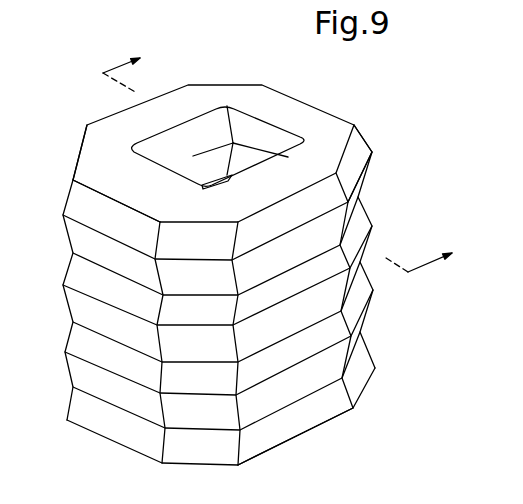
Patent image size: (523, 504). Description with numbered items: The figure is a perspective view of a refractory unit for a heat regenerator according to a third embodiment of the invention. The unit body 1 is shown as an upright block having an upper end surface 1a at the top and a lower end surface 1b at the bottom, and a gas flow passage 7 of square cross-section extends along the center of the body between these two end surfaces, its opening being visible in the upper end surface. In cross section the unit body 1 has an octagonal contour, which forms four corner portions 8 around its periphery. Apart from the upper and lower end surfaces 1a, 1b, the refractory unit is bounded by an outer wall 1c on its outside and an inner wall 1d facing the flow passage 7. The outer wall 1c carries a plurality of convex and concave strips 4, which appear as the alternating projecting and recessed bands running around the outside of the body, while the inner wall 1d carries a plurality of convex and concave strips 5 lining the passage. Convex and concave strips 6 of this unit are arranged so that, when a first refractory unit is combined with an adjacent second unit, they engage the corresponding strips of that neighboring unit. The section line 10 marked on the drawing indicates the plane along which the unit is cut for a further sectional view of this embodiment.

The unit body 1 is at (310, 108).
The upper end surface 1a is at (87, 153).
The lower end surface 1b is at (283, 443).
The outer wall 1c is at (374, 163).
The inner wall 1d is at (187, 173).
The convex and concave strips 4 is at (372, 222).
The convex and concave strips 5 is at (205, 153).
The convex and concave strips 6 is at (372, 373).
The gas flow passage 7 is at (250, 137).
The corner portions 8 is at (63, 311).
The section line 10 is at (290, 153).